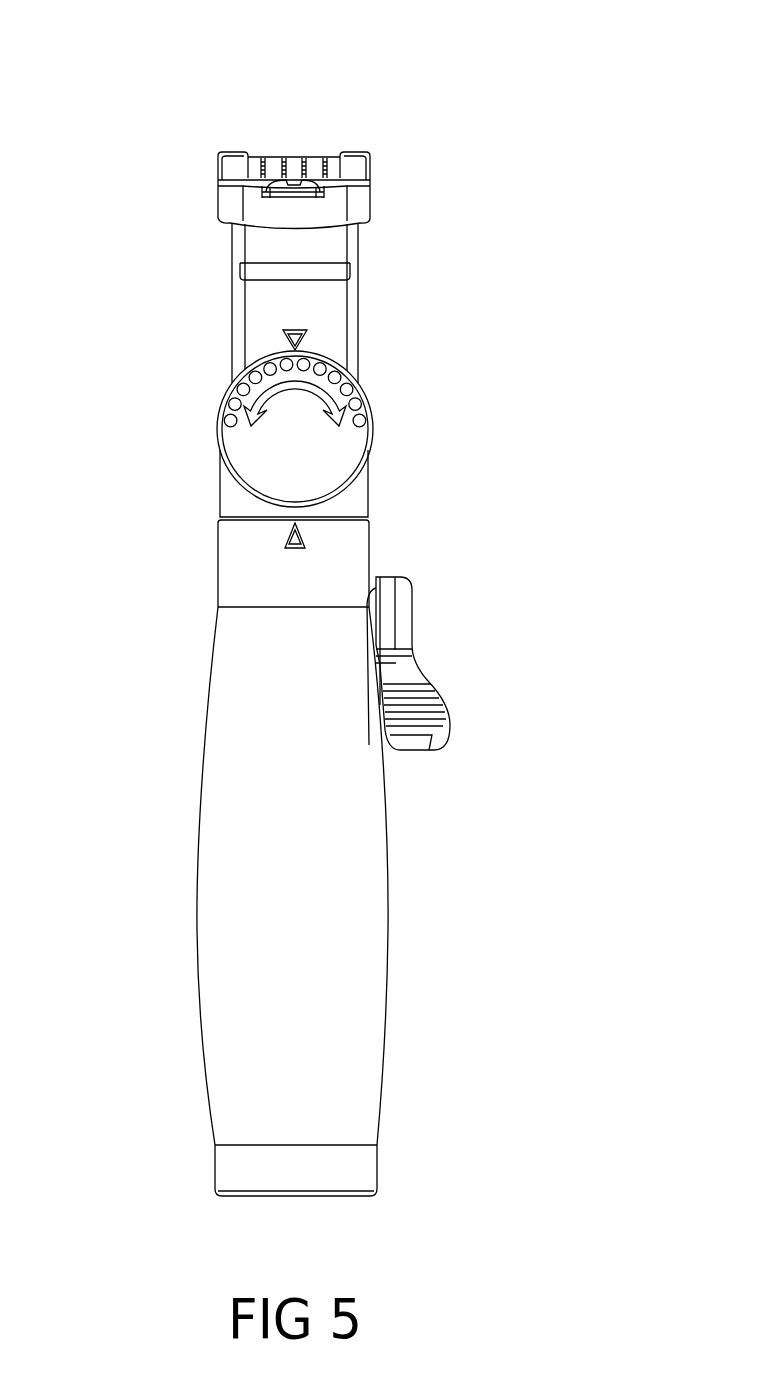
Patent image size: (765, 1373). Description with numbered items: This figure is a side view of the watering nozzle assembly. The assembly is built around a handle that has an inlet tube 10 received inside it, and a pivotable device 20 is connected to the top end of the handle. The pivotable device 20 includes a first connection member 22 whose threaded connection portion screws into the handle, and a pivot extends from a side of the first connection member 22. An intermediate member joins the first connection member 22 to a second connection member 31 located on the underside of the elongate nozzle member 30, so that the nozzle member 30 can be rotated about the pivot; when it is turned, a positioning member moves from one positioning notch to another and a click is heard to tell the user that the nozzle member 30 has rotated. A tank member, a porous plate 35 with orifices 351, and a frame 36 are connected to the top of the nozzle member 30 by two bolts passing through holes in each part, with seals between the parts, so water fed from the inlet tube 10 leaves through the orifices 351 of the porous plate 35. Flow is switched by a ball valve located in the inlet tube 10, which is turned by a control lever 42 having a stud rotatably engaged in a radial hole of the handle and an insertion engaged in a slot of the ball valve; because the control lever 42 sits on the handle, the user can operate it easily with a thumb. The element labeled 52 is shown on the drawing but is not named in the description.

The inlet tube 10 is at (251, 578).
The pivotable device 20 is at (234, 499).
The first connection member 22 is at (311, 448).
The nozzle member 30 is at (261, 294).
The second connection member 31 is at (364, 400).
The porous plate 35 is at (319, 160).
The orifices 351 is at (284, 160).
The frame 36 is at (234, 203).
The control lever 42 is at (404, 612).
The clip 52 is at (301, 194).